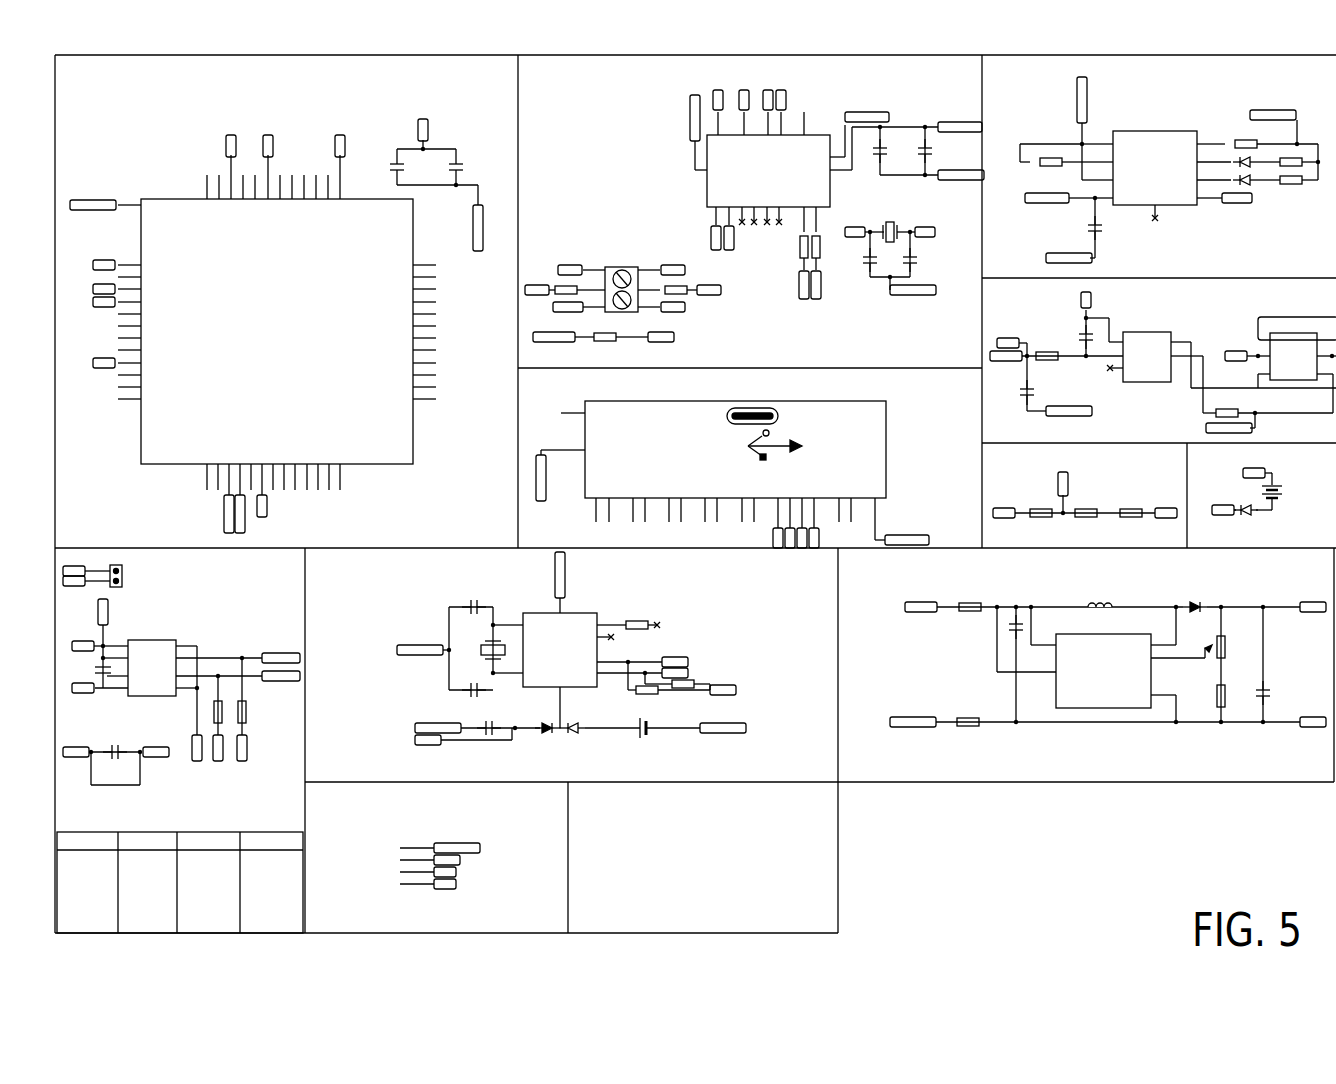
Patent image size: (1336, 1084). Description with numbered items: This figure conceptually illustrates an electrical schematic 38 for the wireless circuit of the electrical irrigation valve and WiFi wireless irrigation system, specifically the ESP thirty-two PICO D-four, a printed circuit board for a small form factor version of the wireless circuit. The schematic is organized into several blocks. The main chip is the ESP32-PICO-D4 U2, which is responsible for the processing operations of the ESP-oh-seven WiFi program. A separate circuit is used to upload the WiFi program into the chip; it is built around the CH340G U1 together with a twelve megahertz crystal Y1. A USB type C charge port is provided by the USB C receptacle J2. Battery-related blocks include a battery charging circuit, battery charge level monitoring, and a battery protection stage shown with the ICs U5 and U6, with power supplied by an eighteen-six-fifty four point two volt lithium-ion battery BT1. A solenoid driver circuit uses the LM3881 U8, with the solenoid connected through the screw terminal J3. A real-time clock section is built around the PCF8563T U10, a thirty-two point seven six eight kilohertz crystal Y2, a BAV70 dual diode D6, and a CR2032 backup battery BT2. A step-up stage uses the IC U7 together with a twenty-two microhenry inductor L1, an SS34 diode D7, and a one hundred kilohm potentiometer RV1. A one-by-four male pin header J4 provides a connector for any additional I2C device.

The electrical schematic 38 is at (695, 494).
The ESP32-PICO-D4 U2 is at (286, 334).
The CH340G U1 is at (773, 172).
The 12 Mhz crystal Y1 is at (890, 226).
The USB_C_Receptacle J2 is at (736, 470).
The DW01A battery protection IC U5 is at (1155, 343).
The FS8205A dual MOSFET U6 is at (1291, 365).
The 18650 4.2V Li-ion battery BT1 is at (1270, 489).
The screw terminal J3 is at (123, 576).
The LM3881 U8 is at (178, 655).
The PCF8563T U10 is at (577, 663).
The 32.768 Khz crystal Y2 is at (476, 648).
The BAV70 D6 is at (560, 739).
The CR2032 BT2 is at (644, 728).
The MT3608 step-up converter U7 is at (1101, 659).
The 22 uH inductor L1 is at (1100, 593).
The SS34 D7 is at (1195, 594).
The 100 k potentiometer RV1 is at (1225, 646).
The Conn_01×04_Male J4 is at (409, 852).